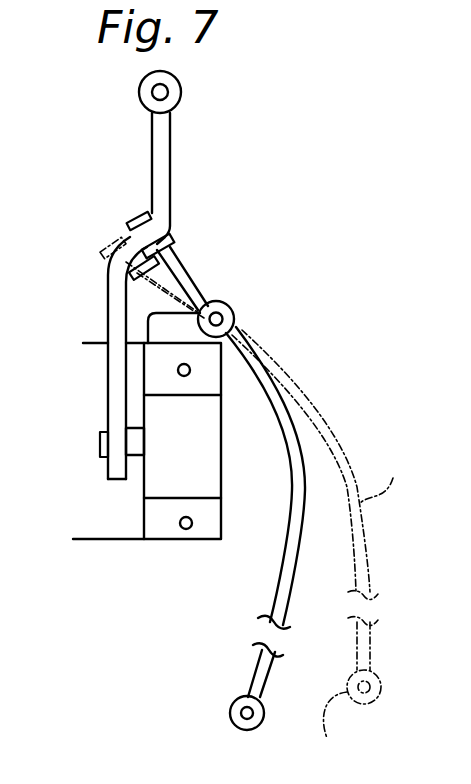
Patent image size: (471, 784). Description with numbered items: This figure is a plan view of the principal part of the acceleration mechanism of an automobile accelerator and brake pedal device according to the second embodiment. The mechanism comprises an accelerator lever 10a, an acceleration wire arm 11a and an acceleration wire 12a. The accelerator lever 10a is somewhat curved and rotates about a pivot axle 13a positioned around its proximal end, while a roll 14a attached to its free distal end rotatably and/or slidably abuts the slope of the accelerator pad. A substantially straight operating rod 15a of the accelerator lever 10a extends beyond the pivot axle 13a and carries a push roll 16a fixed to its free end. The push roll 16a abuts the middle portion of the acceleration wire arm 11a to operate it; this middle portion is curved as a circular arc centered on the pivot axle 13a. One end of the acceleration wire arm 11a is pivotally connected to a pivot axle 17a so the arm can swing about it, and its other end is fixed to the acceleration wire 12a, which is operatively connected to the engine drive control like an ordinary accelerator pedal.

The accelerator lever 10a is at (303, 472).
The acceleration wire arm 11a is at (113, 378).
The acceleration wire 12a is at (160, 92).
The pivot axle 13a is at (216, 319).
The roll 14a is at (264, 720).
The operating rod 15a is at (183, 255).
The push roll 16a is at (146, 217).
The pivot axle 17a is at (100, 443).